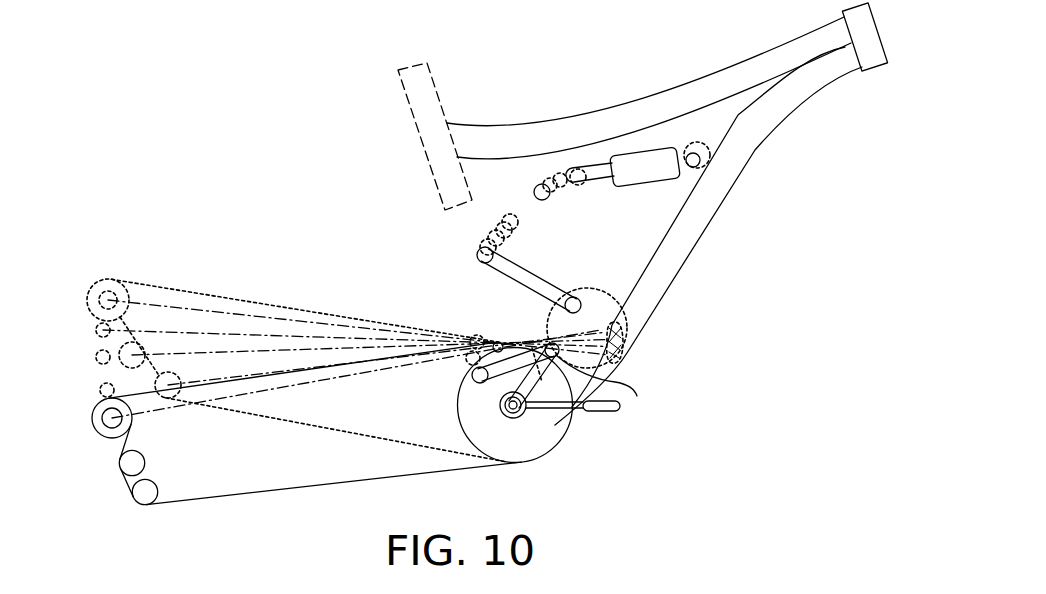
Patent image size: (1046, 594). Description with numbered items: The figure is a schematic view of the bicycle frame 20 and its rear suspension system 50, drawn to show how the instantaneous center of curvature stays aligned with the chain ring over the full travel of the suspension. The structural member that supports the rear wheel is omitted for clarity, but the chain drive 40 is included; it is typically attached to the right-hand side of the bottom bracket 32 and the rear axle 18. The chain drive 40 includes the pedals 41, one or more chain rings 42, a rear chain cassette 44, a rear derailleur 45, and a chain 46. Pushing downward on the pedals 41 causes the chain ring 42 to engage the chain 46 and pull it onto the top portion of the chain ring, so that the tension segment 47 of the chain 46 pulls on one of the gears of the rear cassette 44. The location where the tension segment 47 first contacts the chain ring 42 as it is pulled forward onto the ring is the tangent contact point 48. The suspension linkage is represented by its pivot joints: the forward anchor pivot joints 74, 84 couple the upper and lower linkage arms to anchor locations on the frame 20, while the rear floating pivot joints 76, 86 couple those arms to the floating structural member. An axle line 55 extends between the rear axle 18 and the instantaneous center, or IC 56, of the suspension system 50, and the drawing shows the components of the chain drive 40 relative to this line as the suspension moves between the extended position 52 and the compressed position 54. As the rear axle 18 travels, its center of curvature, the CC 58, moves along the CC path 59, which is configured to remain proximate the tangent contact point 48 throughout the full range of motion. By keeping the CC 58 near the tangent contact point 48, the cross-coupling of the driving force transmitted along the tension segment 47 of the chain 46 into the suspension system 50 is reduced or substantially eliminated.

The rear axle 18 is at (101, 418).
The bicycle frame 20 is at (762, 232).
The bottom bracket 32 is at (510, 417).
The chain drive 40 is at (555, 362).
The pedals 41 is at (620, 411).
The chain ring 42 is at (548, 457).
The rear chain cassette 44 is at (100, 405).
The rear derailleur 45 is at (284, 442).
The chain 46 is at (252, 495).
The tension segment 47 is at (255, 302).
The tangent contact point 48 is at (482, 320).
The suspension system 50 is at (330, 278).
The extended position 52 is at (88, 452).
The compressed position 54 is at (94, 262).
The axle line 55 is at (303, 383).
The IC (instantaneous center) 56 is at (623, 340).
The CC (instantaneous center of curvature) 58 is at (545, 318).
The CC path 59 is at (552, 350).
The forward anchor pivot joint 74 is at (600, 288).
The rear floating pivot joint 76 is at (452, 235).
The forward anchor pivot joint 84 is at (607, 385).
The rear floating pivot joint 86 is at (450, 395).